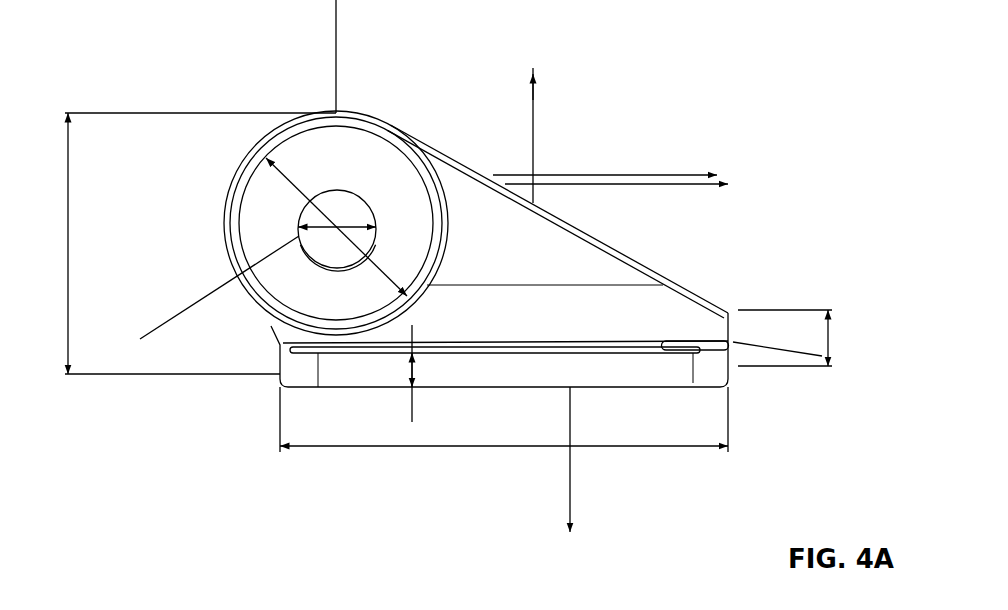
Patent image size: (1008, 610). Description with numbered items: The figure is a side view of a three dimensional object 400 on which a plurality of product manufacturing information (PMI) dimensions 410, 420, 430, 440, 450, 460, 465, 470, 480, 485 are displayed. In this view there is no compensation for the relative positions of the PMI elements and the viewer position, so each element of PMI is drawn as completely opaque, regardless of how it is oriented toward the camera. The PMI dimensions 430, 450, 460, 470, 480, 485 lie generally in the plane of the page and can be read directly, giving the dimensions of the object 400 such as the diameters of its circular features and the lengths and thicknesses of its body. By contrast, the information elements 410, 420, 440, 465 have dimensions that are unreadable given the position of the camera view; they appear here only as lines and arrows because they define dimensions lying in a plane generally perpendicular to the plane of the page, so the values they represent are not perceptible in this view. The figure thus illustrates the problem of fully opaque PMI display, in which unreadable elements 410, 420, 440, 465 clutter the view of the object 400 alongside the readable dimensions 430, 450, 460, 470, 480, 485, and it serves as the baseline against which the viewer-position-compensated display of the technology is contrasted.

The three dimensional object 400 is at (548, 258).
The PMI dimension 410 is at (341, 62).
The PMI dimension 420 is at (538, 128).
The PMI dimension 430 is at (182, 109).
The PMI dimension 440 is at (658, 172).
The PMI dimension 450 is at (779, 306).
The PMI dimension 460 is at (737, 409).
The PMI dimension 465 is at (565, 484).
The PMI dimension 470 is at (409, 402).
The PMI dimension 480 is at (403, 269).
The PMI dimension 485 is at (178, 325).